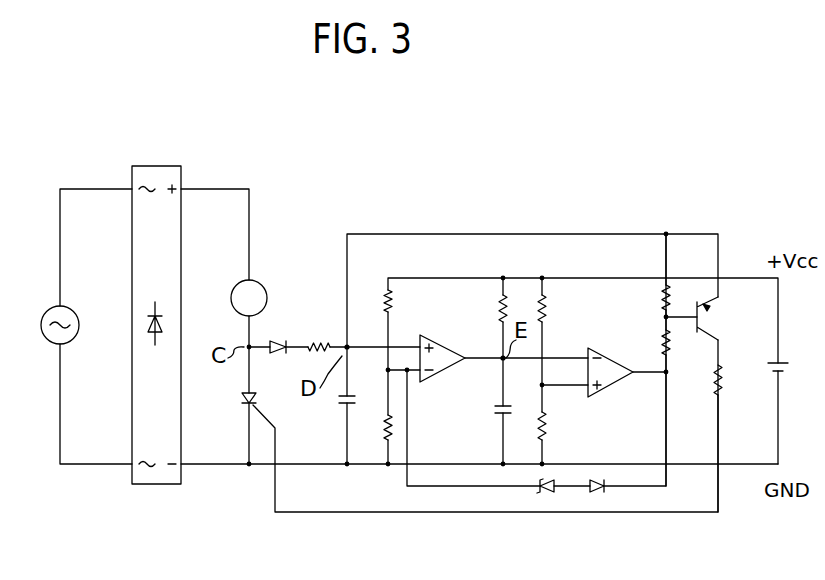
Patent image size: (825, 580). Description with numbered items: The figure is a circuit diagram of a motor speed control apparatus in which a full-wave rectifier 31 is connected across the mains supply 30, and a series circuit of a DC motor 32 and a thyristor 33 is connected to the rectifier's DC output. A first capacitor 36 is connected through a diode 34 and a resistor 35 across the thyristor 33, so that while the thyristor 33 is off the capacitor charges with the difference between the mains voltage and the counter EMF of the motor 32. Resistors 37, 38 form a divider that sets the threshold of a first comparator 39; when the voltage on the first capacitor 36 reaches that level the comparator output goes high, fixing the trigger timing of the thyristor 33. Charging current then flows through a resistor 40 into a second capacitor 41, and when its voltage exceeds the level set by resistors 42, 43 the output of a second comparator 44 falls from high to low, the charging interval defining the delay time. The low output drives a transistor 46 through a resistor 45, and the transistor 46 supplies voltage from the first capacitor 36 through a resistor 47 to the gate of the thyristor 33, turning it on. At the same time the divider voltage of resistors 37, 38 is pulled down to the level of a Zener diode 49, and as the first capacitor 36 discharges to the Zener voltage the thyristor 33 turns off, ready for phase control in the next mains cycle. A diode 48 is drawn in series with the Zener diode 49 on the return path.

The mains supply 30 is at (68, 312).
The full-wave rectifier 31 is at (172, 166).
The DC motor 32 is at (260, 283).
The thyristor 33 is at (248, 402).
The diode 34 is at (278, 340).
The resistor 35 is at (312, 338).
The first capacitor 36 is at (342, 404).
The resistor 37 is at (388, 300).
The resistor 38 is at (382, 419).
The first comparator 39 is at (434, 336).
The resistor 40 is at (500, 306).
The second capacitor 41 is at (502, 412).
The resistor 42 is at (546, 312).
The resistor 43 is at (552, 434).
The second comparator 44 is at (612, 354).
The resistor 45 is at (670, 346).
The transistor 46 is at (708, 318).
The resistor 47 is at (718, 384).
The diode 48 is at (604, 492).
The Zener diode 49 is at (542, 498).